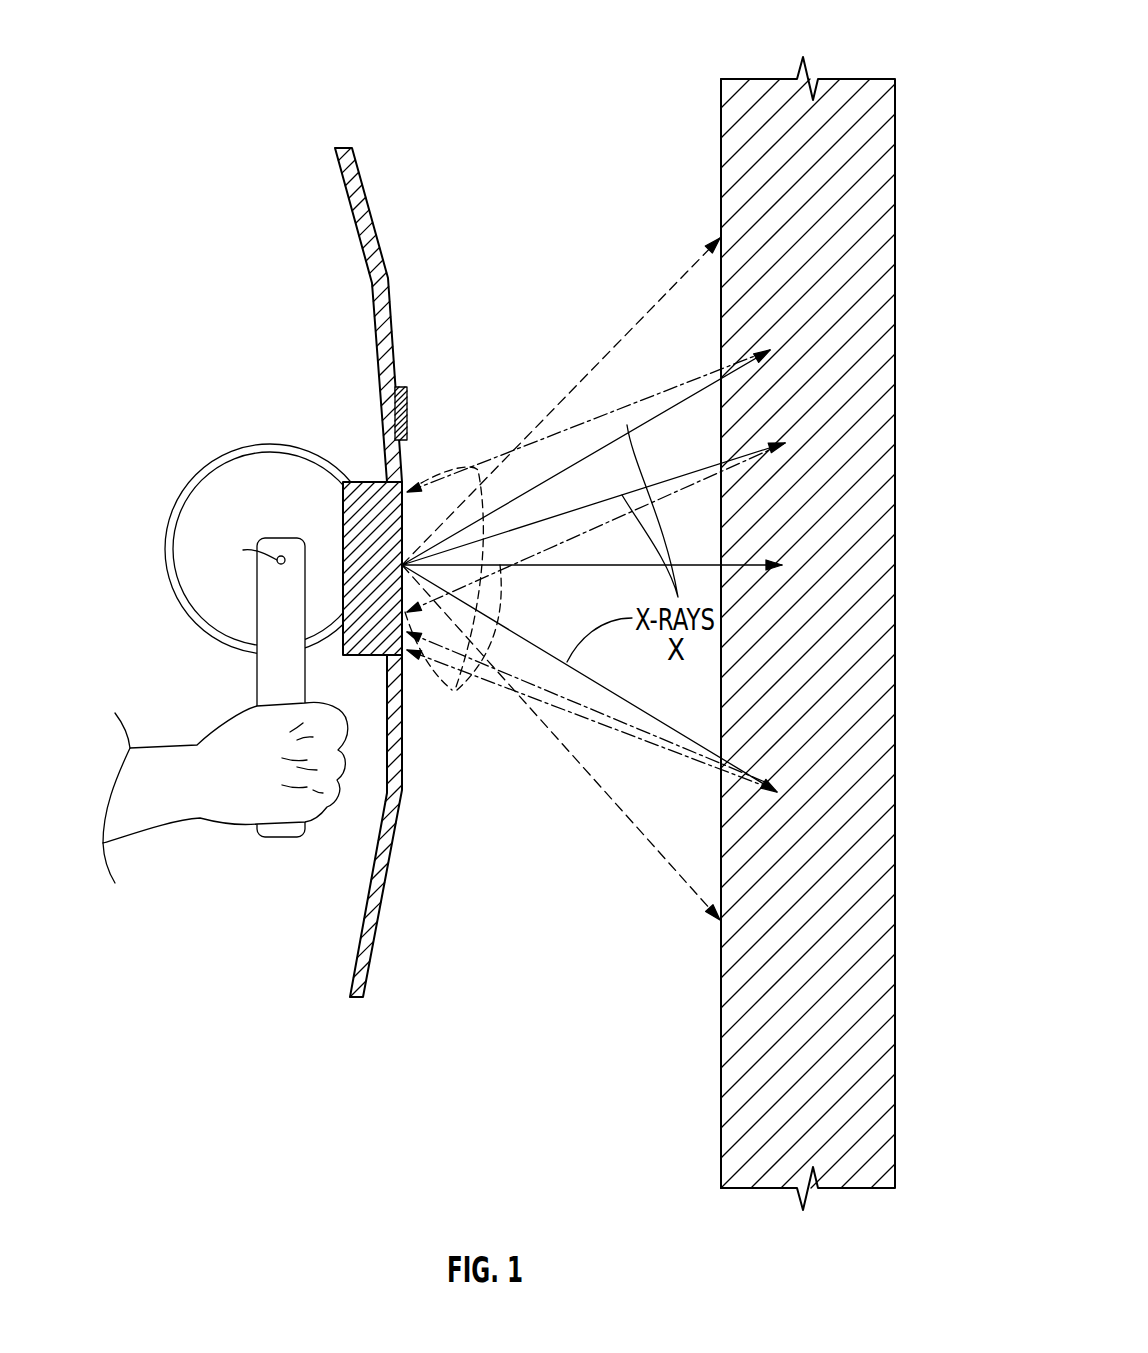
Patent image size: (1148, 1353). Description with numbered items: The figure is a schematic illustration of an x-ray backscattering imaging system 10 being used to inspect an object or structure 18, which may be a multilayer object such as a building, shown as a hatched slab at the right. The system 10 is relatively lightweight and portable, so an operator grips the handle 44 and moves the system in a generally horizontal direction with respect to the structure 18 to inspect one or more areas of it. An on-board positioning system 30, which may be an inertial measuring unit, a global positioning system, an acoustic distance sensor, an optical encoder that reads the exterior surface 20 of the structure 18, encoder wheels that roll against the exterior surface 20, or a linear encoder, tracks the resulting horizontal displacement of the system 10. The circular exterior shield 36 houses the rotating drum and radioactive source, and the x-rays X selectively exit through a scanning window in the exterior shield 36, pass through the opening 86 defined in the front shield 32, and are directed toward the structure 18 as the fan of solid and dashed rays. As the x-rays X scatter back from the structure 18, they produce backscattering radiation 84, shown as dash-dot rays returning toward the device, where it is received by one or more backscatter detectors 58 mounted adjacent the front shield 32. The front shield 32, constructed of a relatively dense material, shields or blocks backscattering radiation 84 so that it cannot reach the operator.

The x-ray backscattering imaging system 10 is at (286, 613).
The structure 18 is at (822, 123).
The exterior surface 20 is at (721, 92).
The on-board positioning system 30 is at (407, 390).
The front shield 32 is at (355, 223).
The exterior shield 36 is at (200, 647).
The handle 44 is at (282, 838).
The backscatter detector 58 is at (343, 510).
The backscattering radiation 84 is at (453, 698).
The opening 86 is at (407, 490).